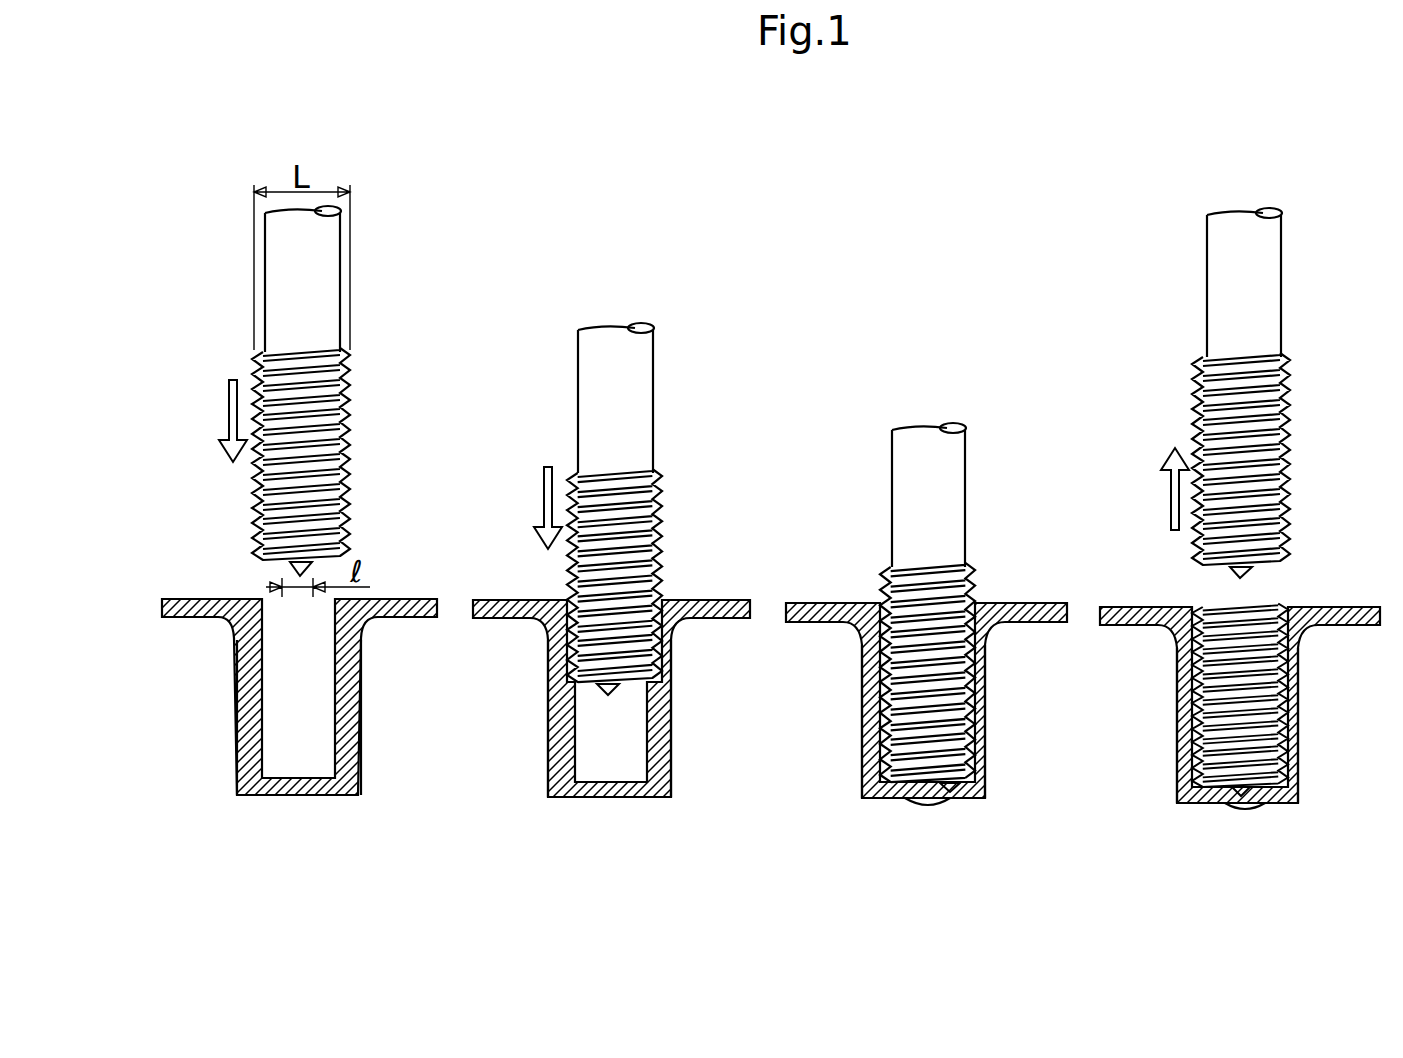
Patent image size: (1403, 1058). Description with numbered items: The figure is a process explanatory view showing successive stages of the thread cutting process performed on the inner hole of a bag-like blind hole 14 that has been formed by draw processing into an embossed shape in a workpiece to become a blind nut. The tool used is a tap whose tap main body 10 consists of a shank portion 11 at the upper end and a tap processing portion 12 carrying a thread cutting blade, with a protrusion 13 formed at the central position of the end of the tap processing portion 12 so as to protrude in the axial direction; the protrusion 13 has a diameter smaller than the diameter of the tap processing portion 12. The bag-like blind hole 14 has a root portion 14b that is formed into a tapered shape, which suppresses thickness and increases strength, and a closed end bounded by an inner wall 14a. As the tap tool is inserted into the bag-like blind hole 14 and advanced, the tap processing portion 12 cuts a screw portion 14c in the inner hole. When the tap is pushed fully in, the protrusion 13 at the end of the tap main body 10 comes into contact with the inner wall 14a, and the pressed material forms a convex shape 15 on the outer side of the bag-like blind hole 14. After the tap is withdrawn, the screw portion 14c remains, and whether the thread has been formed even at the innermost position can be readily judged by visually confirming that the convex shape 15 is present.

The tap main body 10 is at (778, 544).
The shank portion 11 is at (1250, 242).
The tap processing portion 12 is at (1275, 450).
The protrusion 13 is at (1245, 578).
The bag-like blind hole 14 is at (1302, 745).
The inner wall 14a is at (1262, 805).
The root portion 14b is at (1163, 630).
The screw portion 14c is at (1303, 678).
The convex shape 15 is at (1240, 808).